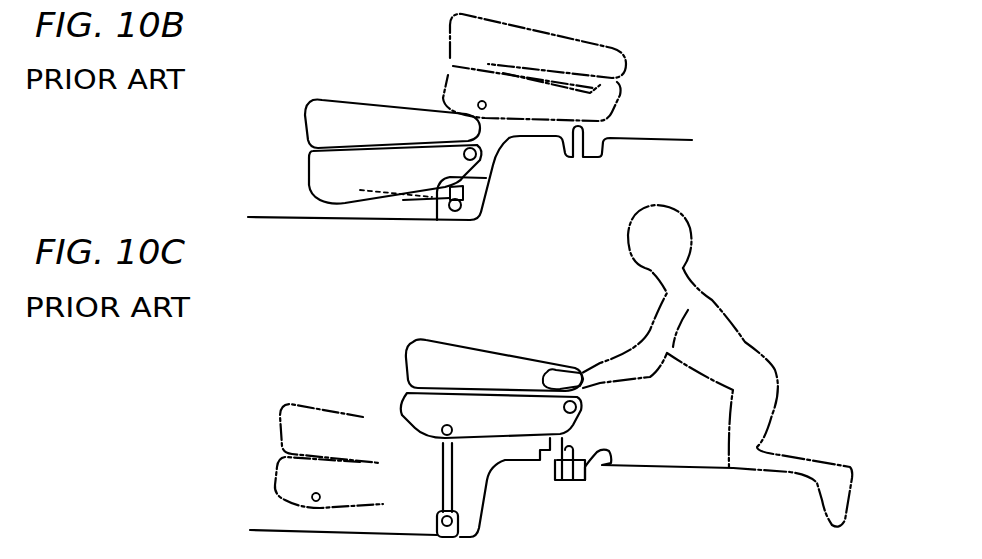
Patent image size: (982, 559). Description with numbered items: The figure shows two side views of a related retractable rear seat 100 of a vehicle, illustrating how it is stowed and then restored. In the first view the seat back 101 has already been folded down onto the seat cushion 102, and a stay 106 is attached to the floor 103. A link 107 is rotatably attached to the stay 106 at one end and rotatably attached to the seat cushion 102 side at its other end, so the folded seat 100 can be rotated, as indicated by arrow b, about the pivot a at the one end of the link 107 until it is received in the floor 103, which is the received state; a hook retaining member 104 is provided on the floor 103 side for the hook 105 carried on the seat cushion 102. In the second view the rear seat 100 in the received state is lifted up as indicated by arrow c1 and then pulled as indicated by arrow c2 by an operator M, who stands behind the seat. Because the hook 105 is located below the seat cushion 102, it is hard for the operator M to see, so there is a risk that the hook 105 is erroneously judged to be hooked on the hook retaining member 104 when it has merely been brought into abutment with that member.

In FIG. 10B, the retractable rear seat 100 is at (756, 53).
In FIG. 10C, the retractable rear seat 100 is at (359, 346).
In FIG. 10B, the seat back 101 is at (353, 100).
In FIG. 10B, the seat cushion 102 is at (308, 163).
In FIG. 10C, the seat cushion 102 is at (405, 397).
In FIG. 10B, the floor 103 is at (283, 217).
In FIG. 10C, the floor 103 is at (360, 533).
In FIG. 10B, the hook retaining member 104 is at (581, 173).
In FIG. 10C, the hook retaining member 104 is at (598, 458).
In FIG. 10C, the hook 105 is at (555, 481).
In FIG. 10B, the stay 106 is at (438, 221).
In FIG. 10C, the stay 106 is at (447, 490).
In FIG. 10B, the link 107 is at (428, 195).
In FIG. 10B, the axis of rotation a is at (390, 190).
In FIG. 10B, the arrow b is at (437, 122).
In FIG. 10C, the arrow c1 is at (400, 436).
In FIG. 10C, the arrow c2 is at (569, 338).
In FIG. 10C, the operator M is at (713, 300).